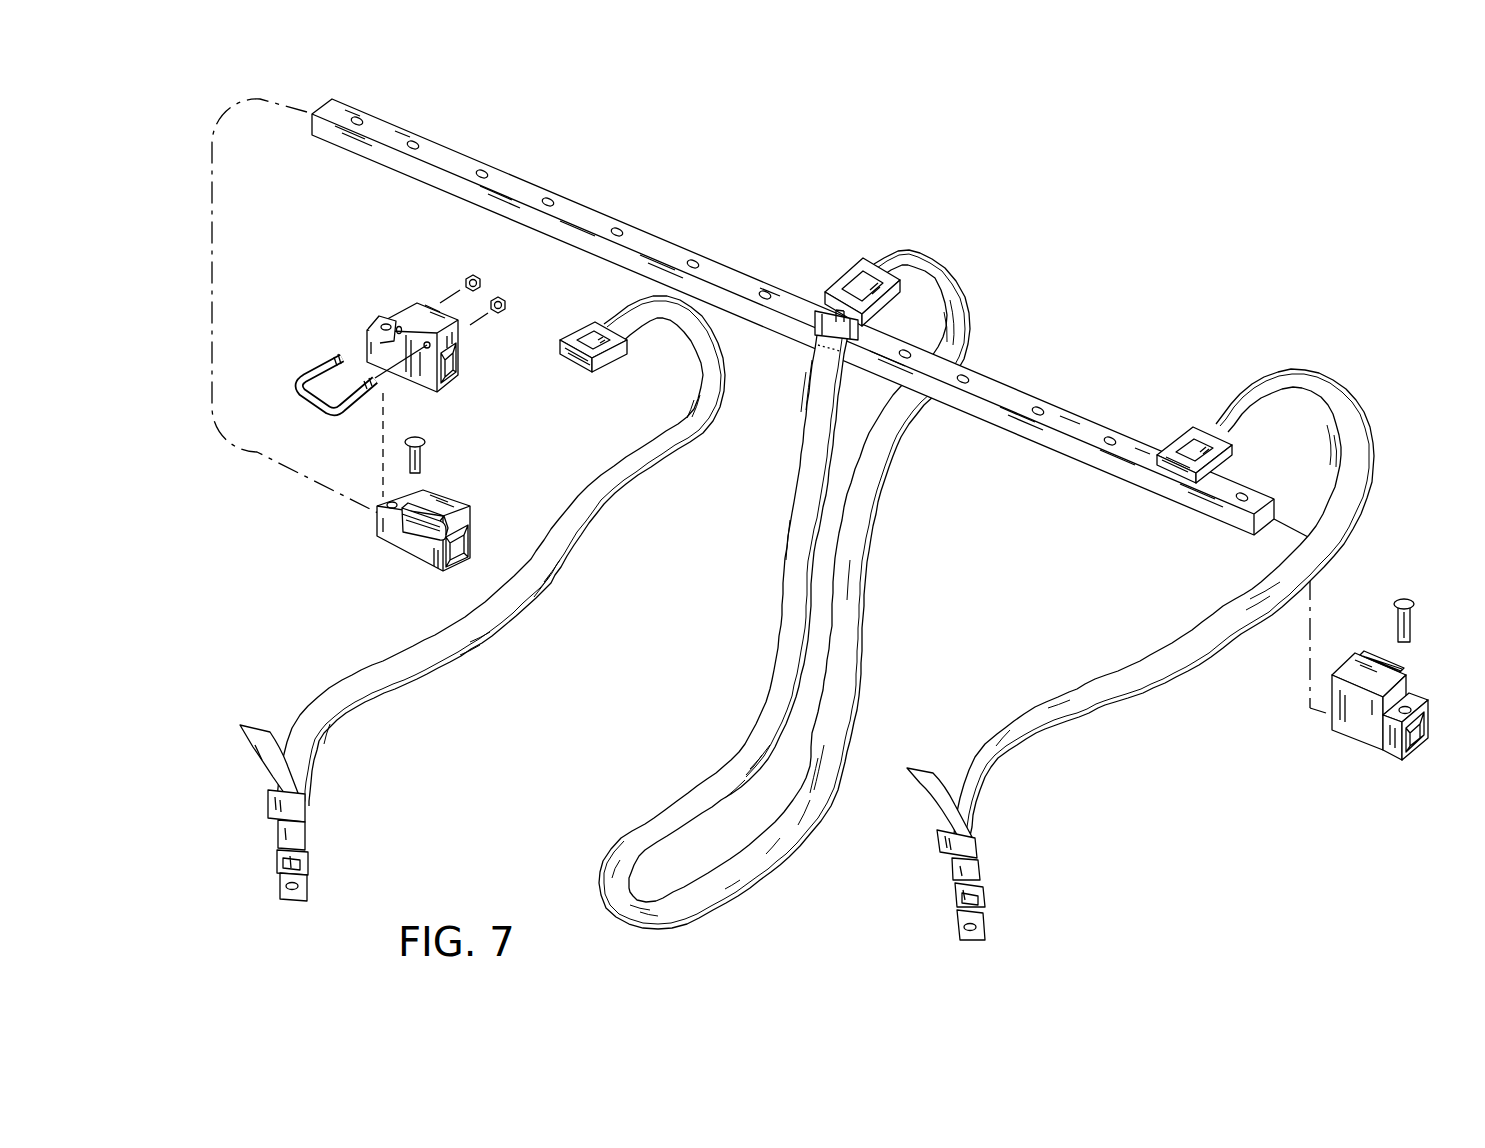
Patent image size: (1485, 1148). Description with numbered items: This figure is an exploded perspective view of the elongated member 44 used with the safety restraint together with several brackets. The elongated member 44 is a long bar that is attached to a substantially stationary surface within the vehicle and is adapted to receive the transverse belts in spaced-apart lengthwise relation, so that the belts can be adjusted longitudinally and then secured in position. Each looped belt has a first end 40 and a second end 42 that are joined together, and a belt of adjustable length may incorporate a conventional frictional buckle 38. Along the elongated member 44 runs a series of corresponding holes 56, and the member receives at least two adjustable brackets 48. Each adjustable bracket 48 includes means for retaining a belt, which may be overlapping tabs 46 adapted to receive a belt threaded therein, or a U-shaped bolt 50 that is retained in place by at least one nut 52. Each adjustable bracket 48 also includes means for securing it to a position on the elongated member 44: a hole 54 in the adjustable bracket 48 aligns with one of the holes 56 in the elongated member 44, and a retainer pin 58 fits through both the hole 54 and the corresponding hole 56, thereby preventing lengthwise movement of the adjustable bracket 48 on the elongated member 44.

The frictional buckle 38 is at (983, 890).
The first end 40 is at (657, 322).
The second end 42 is at (308, 768).
The elongated member 44 is at (645, 238).
The overlapping tabs 46 is at (413, 524).
The adjustable bracket 48 is at (1360, 723).
The U-shaped bolt 50 is at (327, 378).
The nut 52 is at (467, 275).
The hole 54 is at (1406, 704).
The holes 56 is at (1040, 405).
The retainer pin 58 is at (1395, 612).